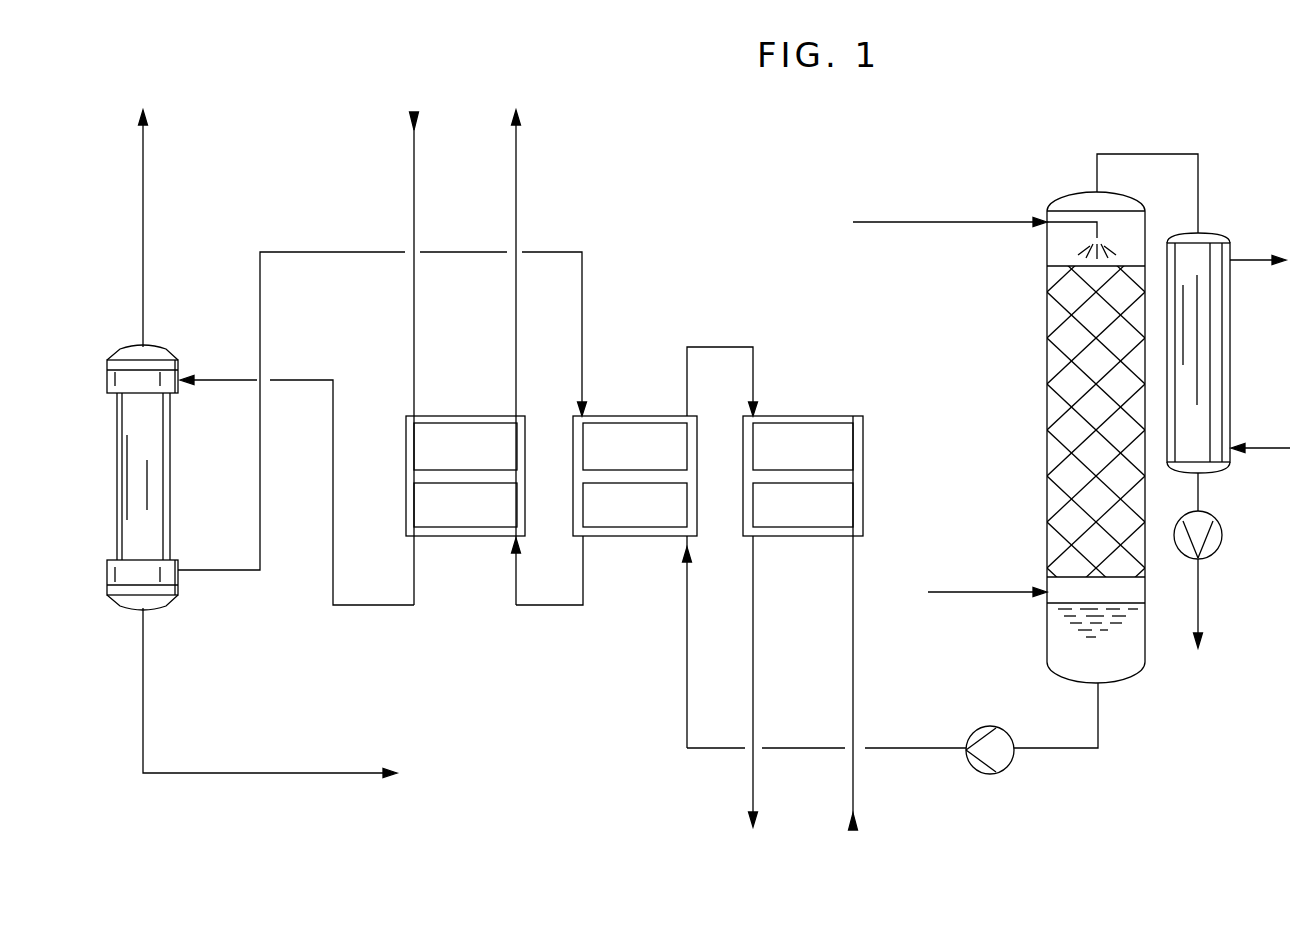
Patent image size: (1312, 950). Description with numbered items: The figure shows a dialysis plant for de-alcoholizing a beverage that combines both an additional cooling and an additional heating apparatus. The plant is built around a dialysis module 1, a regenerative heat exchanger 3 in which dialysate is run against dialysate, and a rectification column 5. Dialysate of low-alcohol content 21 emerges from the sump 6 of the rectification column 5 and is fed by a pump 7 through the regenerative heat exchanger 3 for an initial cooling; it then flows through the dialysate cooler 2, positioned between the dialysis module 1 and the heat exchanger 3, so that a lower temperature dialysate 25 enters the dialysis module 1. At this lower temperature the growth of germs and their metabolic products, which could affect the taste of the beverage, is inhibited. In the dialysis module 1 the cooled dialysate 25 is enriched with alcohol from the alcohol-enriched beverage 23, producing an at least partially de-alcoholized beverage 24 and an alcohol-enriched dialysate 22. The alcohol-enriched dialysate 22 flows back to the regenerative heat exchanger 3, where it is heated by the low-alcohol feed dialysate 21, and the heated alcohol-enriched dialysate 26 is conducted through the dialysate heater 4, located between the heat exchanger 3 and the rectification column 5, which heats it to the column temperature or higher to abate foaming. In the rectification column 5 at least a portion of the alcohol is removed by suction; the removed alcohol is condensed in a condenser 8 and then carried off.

The dialysis module 1 is at (158, 476).
The dialysate cooler 2 is at (452, 520).
The regenerative heat exchanger 3 is at (633, 528).
The dialysate heater 4 is at (810, 528).
The rectification column 5 is at (1028, 397).
The sump 6 is at (1063, 640).
The pump 7 is at (1002, 756).
The condenser 8 is at (1215, 352).
The dialysate of low-alcohol content 21 is at (682, 697).
The alcohol-enriched dialysate 22 is at (305, 238).
The alcohol-enriched beverage 23 is at (300, 703).
The at least partially de-alcoholized beverage 24 is at (142, 202).
The lower temperature dialysate 25 is at (388, 615).
The heated alcohol-enriched dialysate 26 is at (938, 210).